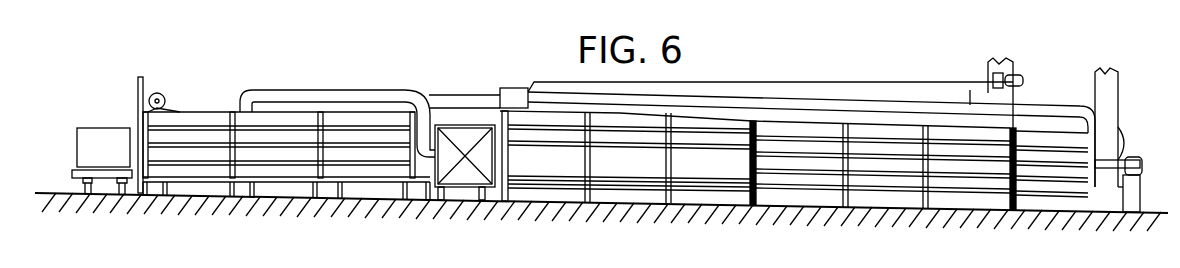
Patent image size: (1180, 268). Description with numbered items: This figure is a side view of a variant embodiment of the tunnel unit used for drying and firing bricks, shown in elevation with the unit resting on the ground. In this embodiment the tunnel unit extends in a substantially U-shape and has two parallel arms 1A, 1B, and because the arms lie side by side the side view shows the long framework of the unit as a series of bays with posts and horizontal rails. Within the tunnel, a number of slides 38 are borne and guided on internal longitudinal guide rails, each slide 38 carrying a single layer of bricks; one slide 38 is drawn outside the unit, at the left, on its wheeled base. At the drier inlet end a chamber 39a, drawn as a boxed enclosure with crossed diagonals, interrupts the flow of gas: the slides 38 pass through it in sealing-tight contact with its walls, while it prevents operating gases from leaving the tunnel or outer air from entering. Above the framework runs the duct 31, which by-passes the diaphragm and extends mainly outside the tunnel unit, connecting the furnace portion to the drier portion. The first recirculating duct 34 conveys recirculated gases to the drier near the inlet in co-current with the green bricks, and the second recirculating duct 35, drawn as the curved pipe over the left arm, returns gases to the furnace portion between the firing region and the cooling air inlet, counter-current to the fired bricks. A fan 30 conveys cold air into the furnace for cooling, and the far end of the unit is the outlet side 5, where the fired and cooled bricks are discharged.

The slide 38 is at (96, 140).
The outlet side 5 is at (143, 78).
The fan 30 is at (164, 102).
The arm 1B is at (270, 125).
The second recirculating duct 35 is at (347, 97).
The first recirculating duct 34 is at (457, 97).
The chamber 39a is at (450, 157).
The arm 1A is at (727, 170).
The duct 31 is at (902, 95).